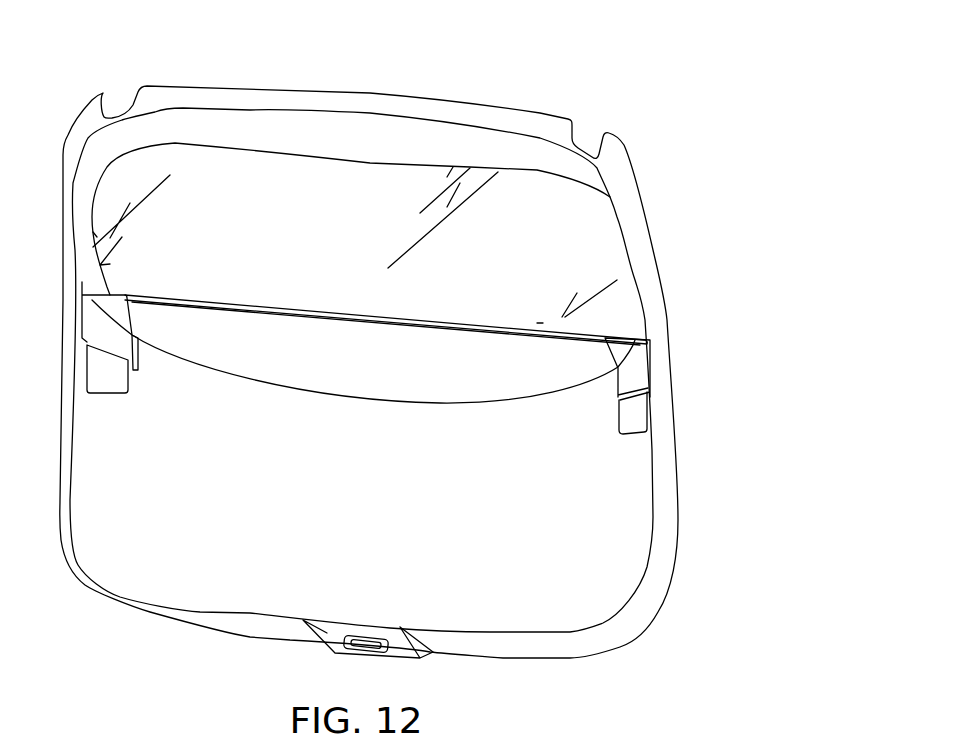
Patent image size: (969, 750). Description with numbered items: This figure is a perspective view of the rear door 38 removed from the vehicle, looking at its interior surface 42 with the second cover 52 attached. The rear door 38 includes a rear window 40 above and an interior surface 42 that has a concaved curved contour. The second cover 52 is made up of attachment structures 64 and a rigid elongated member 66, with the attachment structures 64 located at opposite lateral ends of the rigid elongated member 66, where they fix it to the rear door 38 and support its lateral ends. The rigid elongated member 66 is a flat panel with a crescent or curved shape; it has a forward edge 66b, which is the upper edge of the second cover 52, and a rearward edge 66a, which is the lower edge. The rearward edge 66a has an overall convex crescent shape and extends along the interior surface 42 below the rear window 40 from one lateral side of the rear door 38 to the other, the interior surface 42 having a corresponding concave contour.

The rear door 38 is at (566, 92).
The rear window 40 is at (277, 207).
The interior surface 42 is at (583, 547).
The second cover 52 is at (343, 304).
The attachment structures 64 is at (97, 322).
The rigid elongated member 66 is at (366, 358).
The rearward edge 66a is at (288, 390).
The forward edge 66b is at (492, 327).